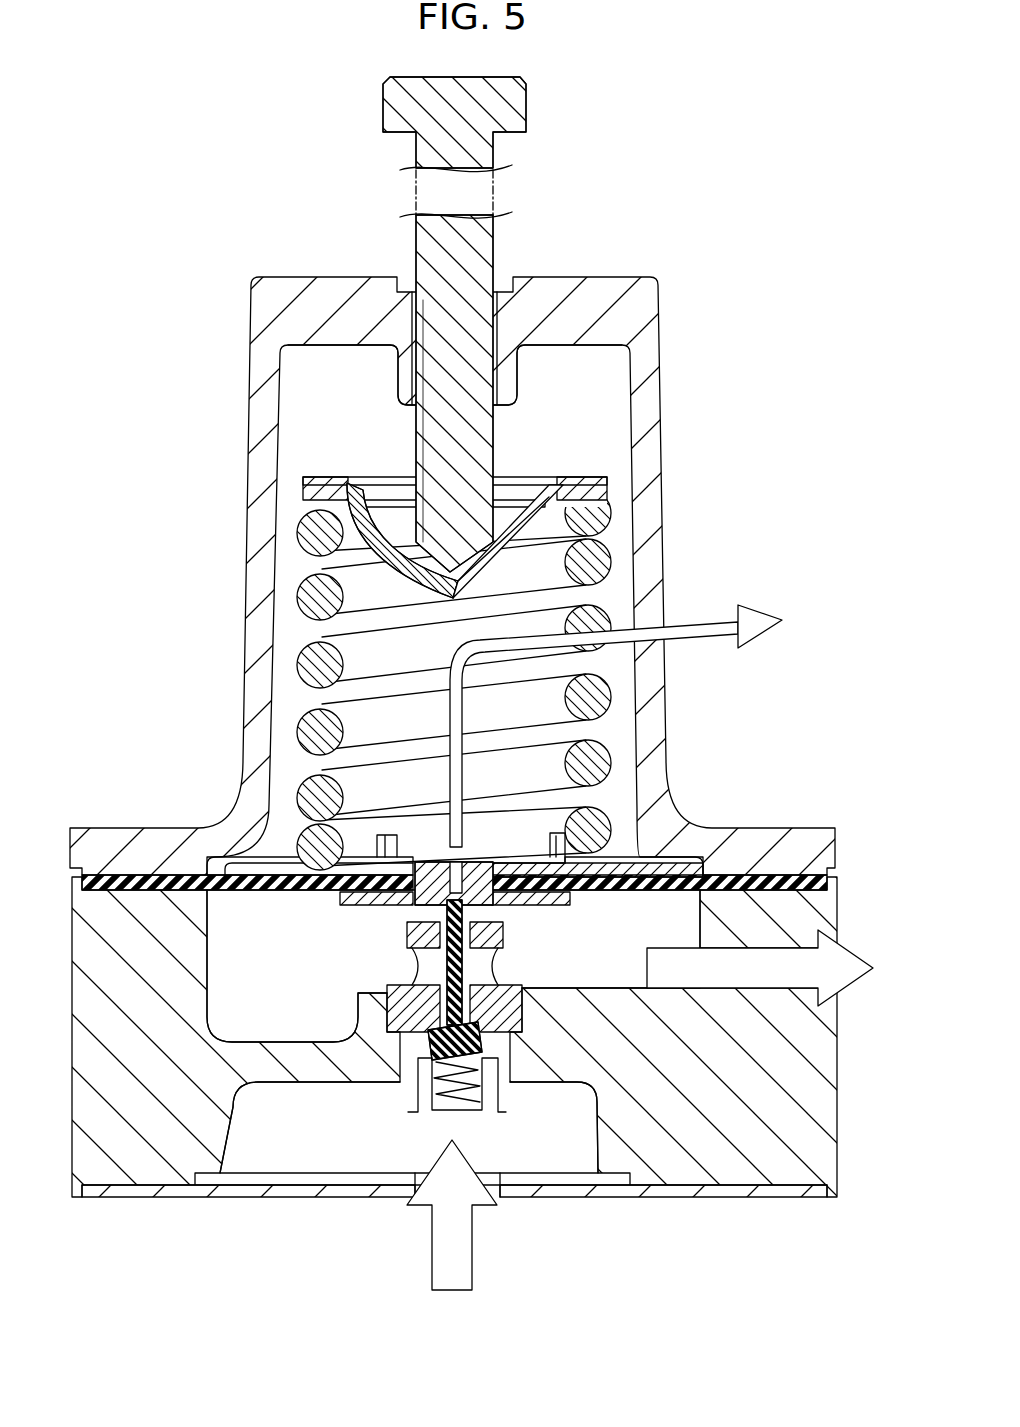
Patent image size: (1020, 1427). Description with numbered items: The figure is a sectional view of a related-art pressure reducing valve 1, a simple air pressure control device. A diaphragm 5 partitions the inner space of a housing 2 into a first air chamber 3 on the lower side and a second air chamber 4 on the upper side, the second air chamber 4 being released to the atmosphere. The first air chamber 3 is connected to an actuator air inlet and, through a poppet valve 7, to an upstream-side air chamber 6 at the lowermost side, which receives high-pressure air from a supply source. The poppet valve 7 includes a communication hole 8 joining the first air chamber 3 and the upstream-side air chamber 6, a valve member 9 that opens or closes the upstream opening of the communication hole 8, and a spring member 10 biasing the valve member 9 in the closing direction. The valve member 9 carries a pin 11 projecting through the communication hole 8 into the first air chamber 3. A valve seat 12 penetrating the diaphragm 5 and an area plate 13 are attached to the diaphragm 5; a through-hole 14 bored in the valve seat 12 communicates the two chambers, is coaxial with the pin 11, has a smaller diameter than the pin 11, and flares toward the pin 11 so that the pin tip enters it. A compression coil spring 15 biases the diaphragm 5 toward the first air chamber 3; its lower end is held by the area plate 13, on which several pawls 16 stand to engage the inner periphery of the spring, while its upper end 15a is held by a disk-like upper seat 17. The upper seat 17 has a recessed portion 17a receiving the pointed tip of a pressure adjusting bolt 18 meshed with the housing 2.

The pressure reducing valve 1 is at (151, 176).
The housing 2 is at (250, 380).
The first air chamber 3 is at (243, 993).
The second air chamber 4 is at (327, 414).
The diaphragm 5 is at (213, 856).
The upstream-side air chamber 6 is at (262, 1145).
The poppet valve 7 is at (402, 1104).
The communication hole 8 is at (443, 1007).
The valve member 9 is at (400, 1035).
The spring member 10 is at (500, 1094).
The pin 11 is at (407, 917).
The valve seat 12 is at (570, 900).
The area plate 13 is at (279, 868).
The through-hole 14 is at (520, 907).
The compression coil spring 15 is at (297, 531).
The spring end portion 15a is at (585, 478).
The pawls 16 is at (386, 832).
The upper seat 17 is at (537, 413).
The recessed portion 17a is at (510, 540).
The pressure adjusting bolt 18 is at (415, 250).